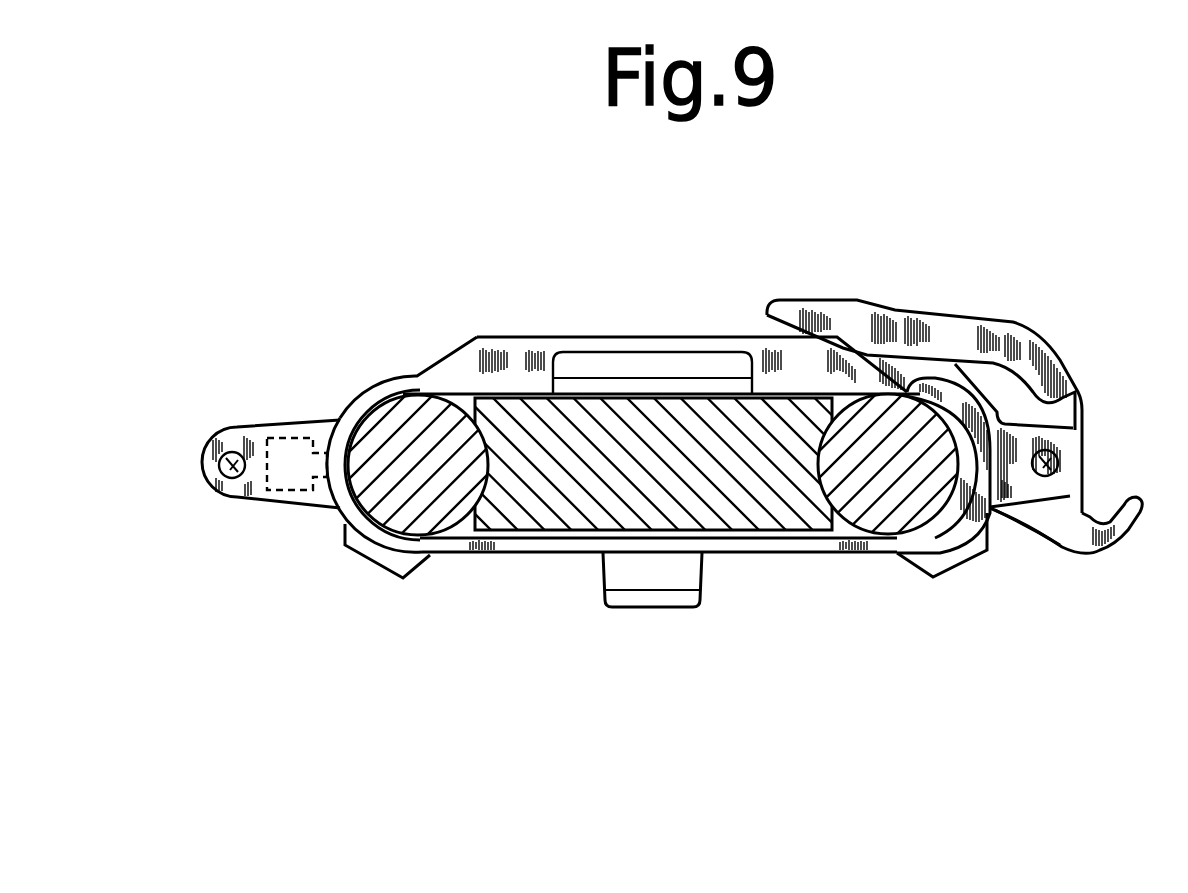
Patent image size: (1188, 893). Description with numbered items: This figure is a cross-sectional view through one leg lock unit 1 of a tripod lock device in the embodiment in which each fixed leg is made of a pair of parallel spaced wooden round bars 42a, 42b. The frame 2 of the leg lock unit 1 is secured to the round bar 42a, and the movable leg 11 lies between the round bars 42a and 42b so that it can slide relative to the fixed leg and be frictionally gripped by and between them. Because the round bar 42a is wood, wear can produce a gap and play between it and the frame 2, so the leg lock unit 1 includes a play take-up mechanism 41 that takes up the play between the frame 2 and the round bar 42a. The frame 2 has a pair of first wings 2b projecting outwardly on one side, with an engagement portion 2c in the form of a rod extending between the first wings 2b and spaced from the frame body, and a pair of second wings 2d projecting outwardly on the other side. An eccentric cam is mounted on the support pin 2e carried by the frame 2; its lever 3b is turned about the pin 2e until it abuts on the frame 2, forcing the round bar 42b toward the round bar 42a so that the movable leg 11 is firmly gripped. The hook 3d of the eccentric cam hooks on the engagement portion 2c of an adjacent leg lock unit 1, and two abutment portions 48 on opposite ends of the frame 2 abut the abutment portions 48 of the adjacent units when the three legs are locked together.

The leg lock unit 1 is at (623, 336).
The frame 2 is at (762, 344).
The first wings 2b is at (279, 502).
The engagement portion 2c is at (224, 480).
The second wings 2d is at (1015, 490).
The support pin 2e is at (1083, 442).
The lever 3b is at (1002, 318).
The hook 3d is at (1120, 528).
The movable leg 11 is at (568, 505).
The play take-up mechanism 41 is at (333, 450).
The round bar 42a is at (393, 420).
The round bar 42b is at (876, 513).
The abutment portions 48 is at (392, 562).